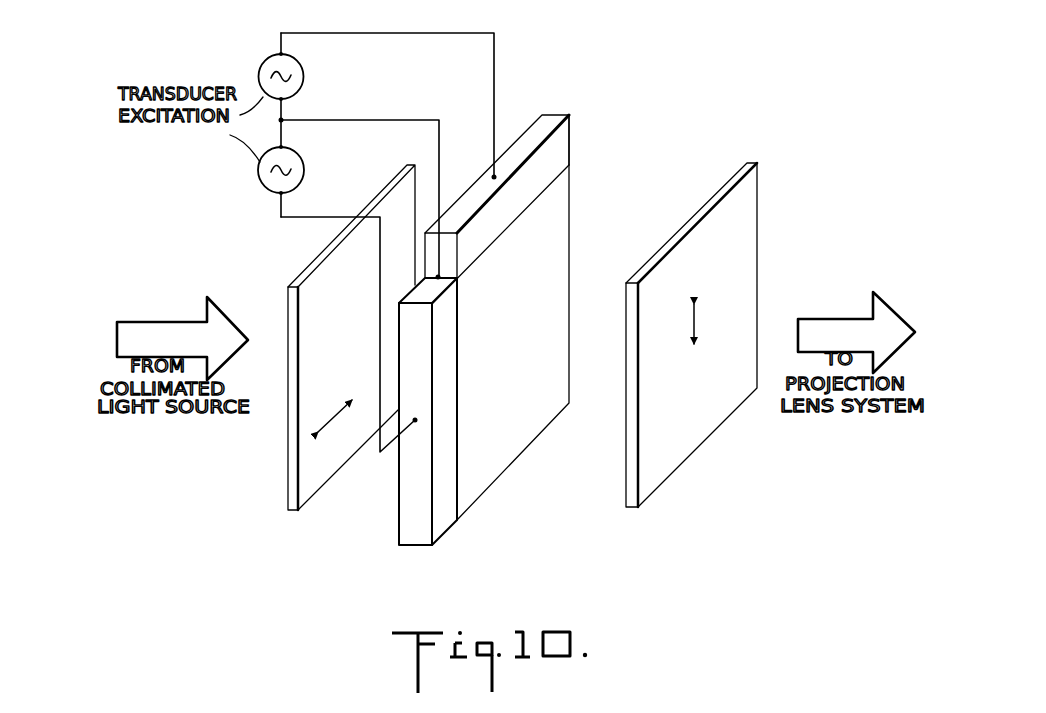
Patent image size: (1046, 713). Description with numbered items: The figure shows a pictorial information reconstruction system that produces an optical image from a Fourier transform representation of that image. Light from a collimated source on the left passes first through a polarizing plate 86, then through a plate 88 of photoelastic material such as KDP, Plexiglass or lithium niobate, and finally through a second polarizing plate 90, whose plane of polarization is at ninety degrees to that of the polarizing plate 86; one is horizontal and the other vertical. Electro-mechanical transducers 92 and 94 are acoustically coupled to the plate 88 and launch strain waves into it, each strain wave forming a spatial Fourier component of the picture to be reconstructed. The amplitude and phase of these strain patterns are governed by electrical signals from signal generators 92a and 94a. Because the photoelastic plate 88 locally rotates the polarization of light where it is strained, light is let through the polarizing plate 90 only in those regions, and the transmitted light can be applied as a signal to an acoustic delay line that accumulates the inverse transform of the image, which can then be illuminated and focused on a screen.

The polarizing plate 86 is at (292, 512).
The plate of photoelastic material 88 is at (558, 197).
The polarizing plate 90 is at (640, 493).
The electro-mechanical transducer 92 is at (567, 133).
The electro-mechanical transducer 94 is at (412, 537).
The signal generator 92a is at (303, 72).
The signal generator 94a is at (305, 168).